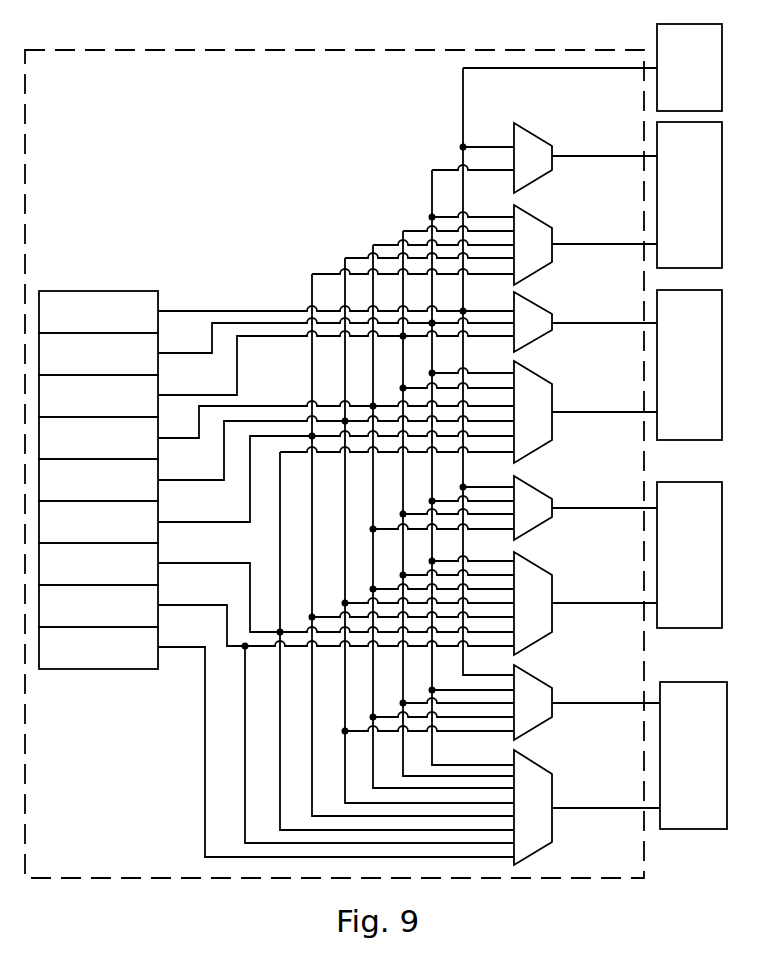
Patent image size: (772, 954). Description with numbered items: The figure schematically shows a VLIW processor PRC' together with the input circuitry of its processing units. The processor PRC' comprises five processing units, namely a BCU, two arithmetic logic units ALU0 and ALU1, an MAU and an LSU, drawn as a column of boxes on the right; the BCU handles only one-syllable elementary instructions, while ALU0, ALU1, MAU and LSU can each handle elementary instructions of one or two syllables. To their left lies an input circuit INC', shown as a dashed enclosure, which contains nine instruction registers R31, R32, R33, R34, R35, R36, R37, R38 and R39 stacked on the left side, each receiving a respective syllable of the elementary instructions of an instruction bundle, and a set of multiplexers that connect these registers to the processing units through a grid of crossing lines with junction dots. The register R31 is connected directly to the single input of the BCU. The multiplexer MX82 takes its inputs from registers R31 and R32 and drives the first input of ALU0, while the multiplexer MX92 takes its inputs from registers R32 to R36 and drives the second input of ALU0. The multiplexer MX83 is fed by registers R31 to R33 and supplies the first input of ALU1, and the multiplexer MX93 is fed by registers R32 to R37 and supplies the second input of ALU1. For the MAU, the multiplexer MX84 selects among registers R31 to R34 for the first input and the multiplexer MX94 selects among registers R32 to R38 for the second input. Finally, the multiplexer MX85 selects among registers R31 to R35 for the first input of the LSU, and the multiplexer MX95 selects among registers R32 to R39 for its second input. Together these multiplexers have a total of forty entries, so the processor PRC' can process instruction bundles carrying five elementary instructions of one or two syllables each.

The instruction register R31 is at (78, 323).
The instruction register R32 is at (78, 365).
The instruction register R33 is at (78, 407).
The instruction register R34 is at (78, 449).
The instruction register R35 is at (78, 491).
The instruction register R36 is at (78, 533).
The instruction register R37 is at (78, 575).
The instruction register R38 is at (78, 617).
The instruction register R39 is at (78, 659).
The multiplexer MX82 is at (540, 139).
The multiplexer MX92 is at (540, 221).
The multiplexer MX83 is at (540, 308).
The multiplexer MX93 is at (540, 377).
The multiplexer MX84 is at (540, 492).
The multiplexer MX94 is at (540, 568).
The multiplexer MX85 is at (540, 681).
The multiplexer MX95 is at (540, 766).
The branch control unit BCU is at (666, 79).
The arithmetic logic unit ALU0 is at (718, 203).
The arithmetic logic unit ALU1 is at (718, 376).
The multiply-accumulate unit MAU is at (664, 561).
The load/store unit LSU is at (672, 764).
The input circuit INC' is at (334, 464).
The processor PRC' is at (709, 879).